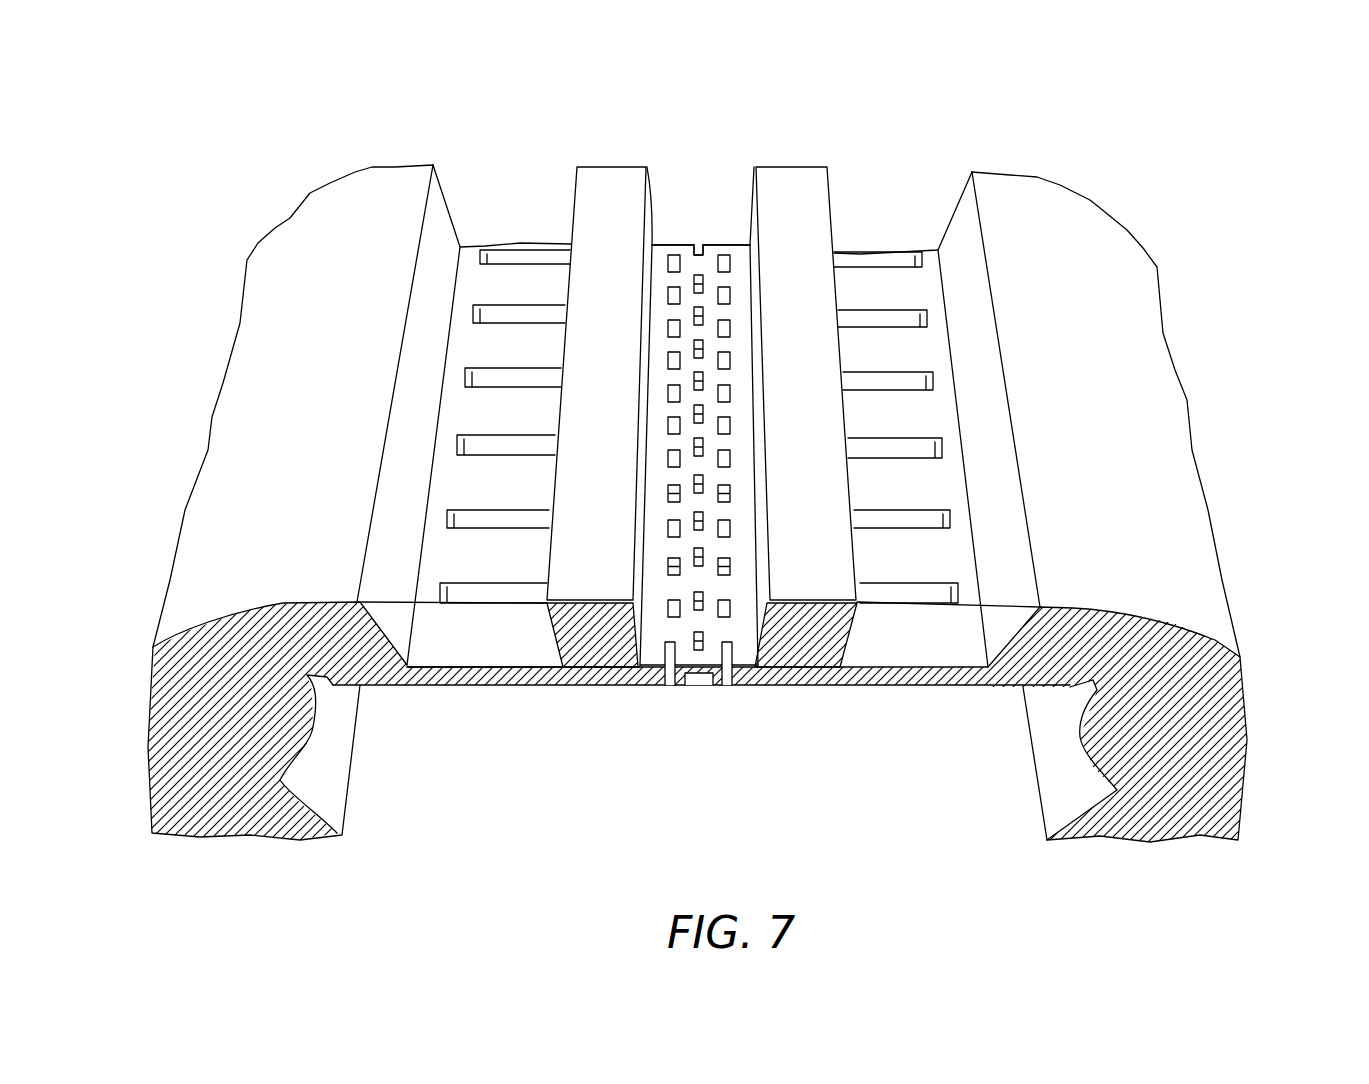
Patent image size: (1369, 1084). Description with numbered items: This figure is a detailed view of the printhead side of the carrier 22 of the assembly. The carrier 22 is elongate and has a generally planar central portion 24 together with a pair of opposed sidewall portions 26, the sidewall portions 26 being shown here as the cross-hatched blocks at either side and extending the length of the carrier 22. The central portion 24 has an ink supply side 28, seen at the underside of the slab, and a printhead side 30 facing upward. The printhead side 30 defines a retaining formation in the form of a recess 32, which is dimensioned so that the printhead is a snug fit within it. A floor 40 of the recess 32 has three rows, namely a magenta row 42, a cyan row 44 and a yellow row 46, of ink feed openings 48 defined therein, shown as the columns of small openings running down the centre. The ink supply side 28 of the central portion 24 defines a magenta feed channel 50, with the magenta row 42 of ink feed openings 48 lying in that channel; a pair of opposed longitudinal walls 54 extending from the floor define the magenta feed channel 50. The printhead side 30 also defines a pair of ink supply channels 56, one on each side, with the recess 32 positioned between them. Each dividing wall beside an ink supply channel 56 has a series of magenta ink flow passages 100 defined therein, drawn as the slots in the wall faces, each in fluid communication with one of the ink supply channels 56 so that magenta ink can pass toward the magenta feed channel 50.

The carrier 22 is at (1183, 397).
The central portion 24 is at (870, 687).
The sidewall portions 26 is at (150, 720).
The ink supply side 28 is at (572, 692).
The printhead side 30 is at (783, 183).
The recess 32 is at (700, 163).
The floor 40 is at (655, 235).
The magenta row 42 is at (700, 240).
The cyan row 44 is at (723, 240).
The yellow row 46 is at (675, 242).
The ink feed openings 48 is at (678, 385).
The magenta feed channel 50 is at (695, 682).
The longitudinal walls 54 is at (672, 685).
The ink supply channels 56 is at (527, 165).
The magenta ink flow passage 100 is at (482, 433).